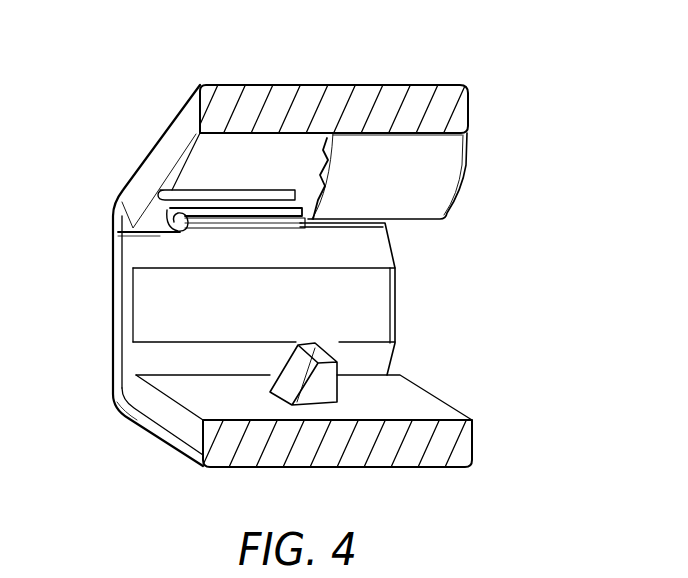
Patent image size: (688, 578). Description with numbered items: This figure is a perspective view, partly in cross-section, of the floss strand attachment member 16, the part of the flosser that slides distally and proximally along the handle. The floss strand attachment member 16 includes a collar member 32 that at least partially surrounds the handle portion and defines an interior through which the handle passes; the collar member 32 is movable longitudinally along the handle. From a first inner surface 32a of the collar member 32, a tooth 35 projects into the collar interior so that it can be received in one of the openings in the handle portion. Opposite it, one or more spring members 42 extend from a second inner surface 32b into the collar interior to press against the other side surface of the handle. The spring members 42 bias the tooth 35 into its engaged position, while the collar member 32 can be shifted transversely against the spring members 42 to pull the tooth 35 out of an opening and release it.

The floss strand attachment member 16 is at (531, 129).
The collar member 32 is at (447, 97).
The first inner surface 32a is at (428, 400).
The second inner surface 32b is at (210, 158).
The tooth 35 is at (318, 380).
The spring member 42 is at (443, 175).